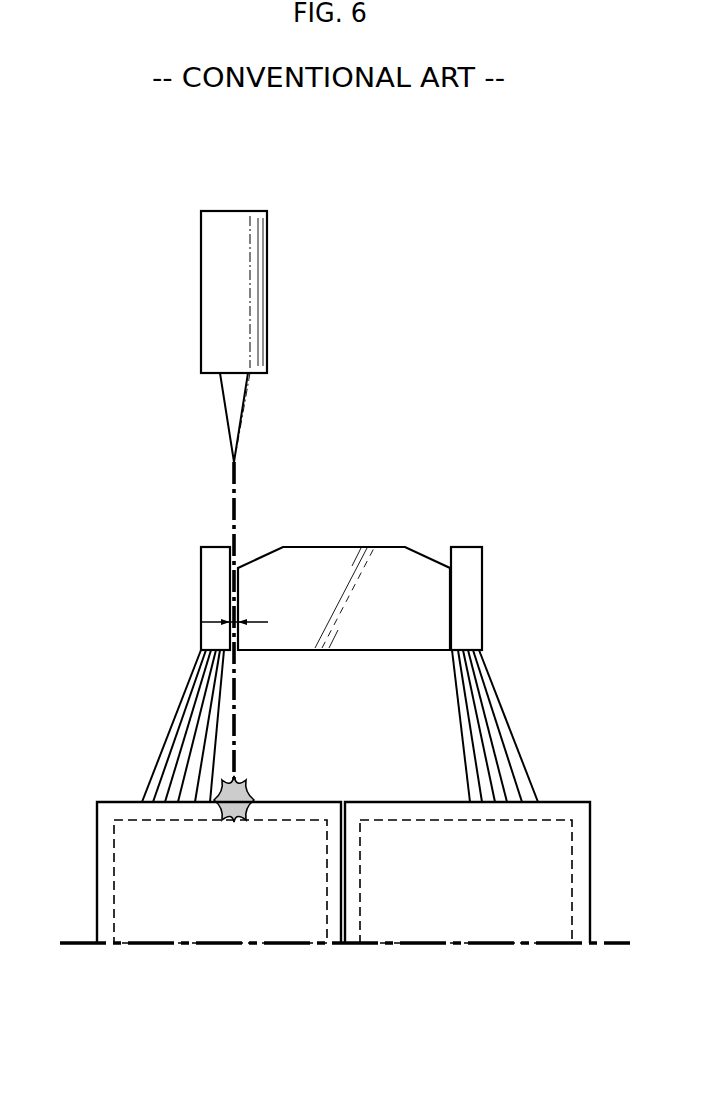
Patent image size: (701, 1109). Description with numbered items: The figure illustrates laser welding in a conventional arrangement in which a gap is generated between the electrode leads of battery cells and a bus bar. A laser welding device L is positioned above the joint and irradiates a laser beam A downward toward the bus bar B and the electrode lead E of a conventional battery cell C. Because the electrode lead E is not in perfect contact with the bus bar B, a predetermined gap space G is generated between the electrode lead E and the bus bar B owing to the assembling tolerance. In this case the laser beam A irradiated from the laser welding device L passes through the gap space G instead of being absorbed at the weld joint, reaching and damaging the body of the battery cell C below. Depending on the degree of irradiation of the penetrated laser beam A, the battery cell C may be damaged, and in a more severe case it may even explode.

The laser welding device L is at (203, 283).
The laser beam A is at (237, 716).
The bus bar B is at (336, 536).
The electrode lead E is at (203, 571).
The gap space G is at (236, 611).
The battery cell C is at (86, 848).